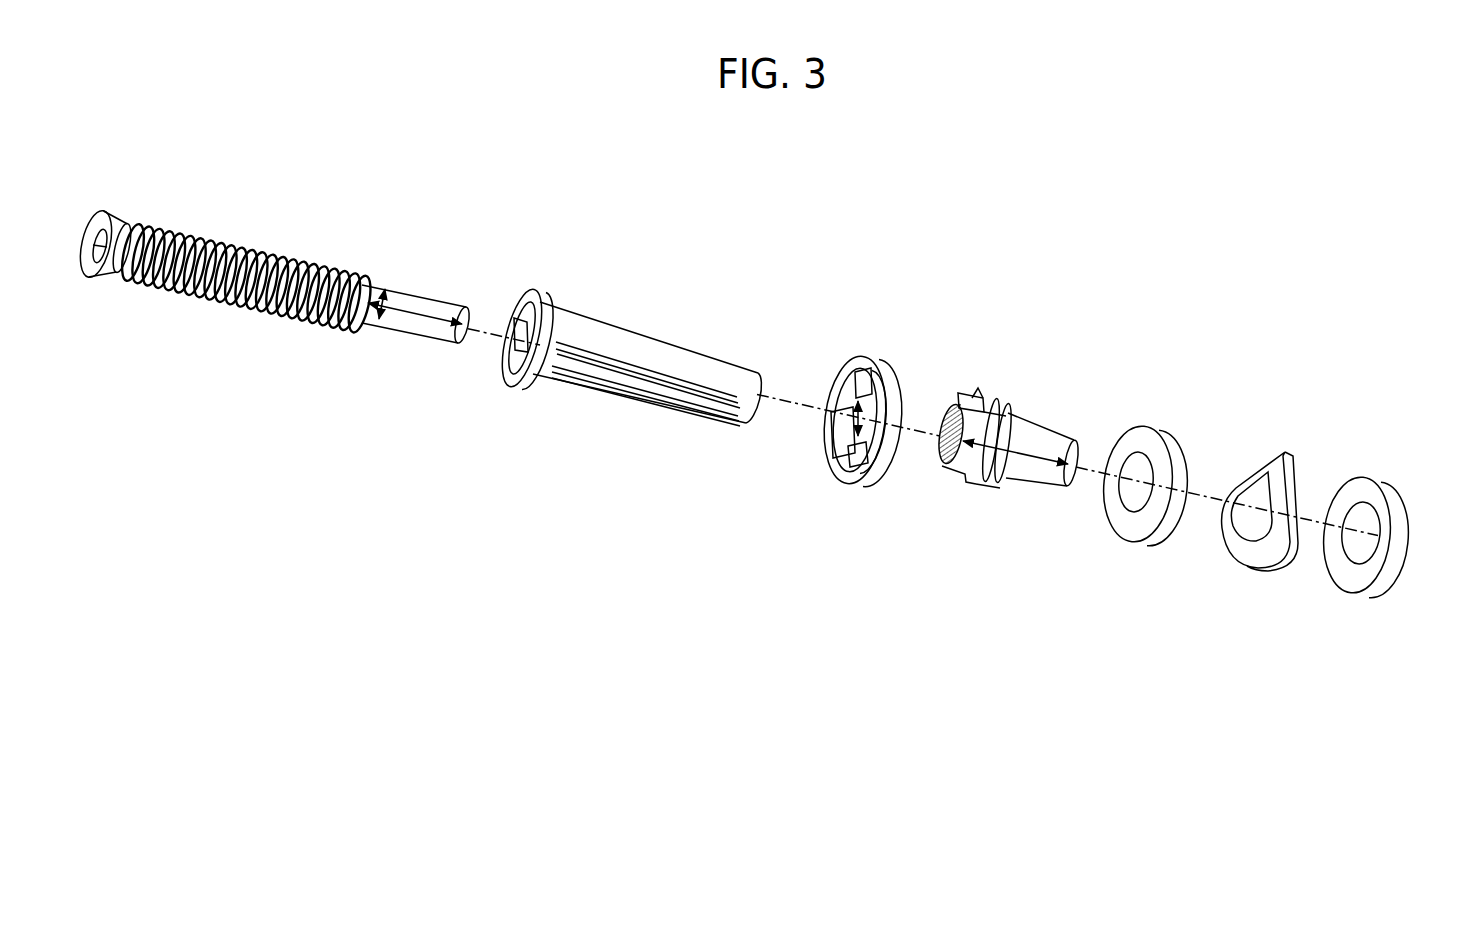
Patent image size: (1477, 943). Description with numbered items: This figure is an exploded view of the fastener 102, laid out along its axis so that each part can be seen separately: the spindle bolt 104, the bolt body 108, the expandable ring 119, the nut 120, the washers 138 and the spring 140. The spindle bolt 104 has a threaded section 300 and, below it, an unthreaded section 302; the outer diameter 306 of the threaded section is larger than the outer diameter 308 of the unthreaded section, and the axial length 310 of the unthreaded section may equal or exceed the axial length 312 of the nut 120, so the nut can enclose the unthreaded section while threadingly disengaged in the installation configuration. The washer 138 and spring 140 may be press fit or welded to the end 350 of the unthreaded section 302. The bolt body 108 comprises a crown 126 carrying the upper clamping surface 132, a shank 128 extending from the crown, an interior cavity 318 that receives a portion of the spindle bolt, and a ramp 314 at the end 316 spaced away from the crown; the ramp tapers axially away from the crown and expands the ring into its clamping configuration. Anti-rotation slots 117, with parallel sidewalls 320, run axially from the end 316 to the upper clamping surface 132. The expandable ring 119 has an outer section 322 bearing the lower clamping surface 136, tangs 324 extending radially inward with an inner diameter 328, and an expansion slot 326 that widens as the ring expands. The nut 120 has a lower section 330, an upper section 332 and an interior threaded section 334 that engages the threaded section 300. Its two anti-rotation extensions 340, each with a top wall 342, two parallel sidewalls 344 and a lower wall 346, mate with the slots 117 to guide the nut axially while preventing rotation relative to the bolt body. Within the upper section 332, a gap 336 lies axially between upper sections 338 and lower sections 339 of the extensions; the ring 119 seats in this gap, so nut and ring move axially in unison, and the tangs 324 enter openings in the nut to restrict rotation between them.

The fastener 102 is at (988, 214).
The spindle bolt 104 is at (492, 248).
The bolt body 108 is at (790, 339).
The anti-rotation slots 117 is at (743, 402).
The expandable ring 119 is at (908, 338).
The nut 120 is at (1112, 358).
The crown 126 is at (531, 395).
The shank 128 is at (750, 354).
The upper clamping surface 132 is at (538, 358).
The lower clamping surface 136 is at (858, 358).
The washer 138 is at (1186, 405).
The spring 140 is at (1294, 427).
The threaded section 300 is at (362, 264).
The unthreaded section 302 is at (478, 290).
The outer diameter 306 is at (313, 268).
The outer diameter 308 is at (386, 320).
The axial length 310 is at (446, 321).
The axial length 312 is at (1016, 457).
The ramp 314 is at (761, 383).
The end 316 is at (771, 411).
The interior cavity 318 is at (648, 375).
The sidewalls 320 is at (700, 383).
The outer section 322 is at (837, 489).
The tangs 324 is at (860, 386).
The expansion slot 326 is at (828, 458).
The inner diameter 328 is at (860, 418).
The lower section 330 is at (1095, 393).
The upper section 332 is at (1023, 367).
The interior threaded section 334 is at (944, 443).
The gap 336 is at (966, 488).
The upper sections 338 is at (954, 480).
The lower sections 339 is at (983, 478).
The anti-rotation extensions 340 is at (955, 380).
The top wall 342 is at (960, 398).
The sidewalls 344 is at (980, 404).
The lower wall 346 is at (1010, 408).
The end 350 is at (471, 338).